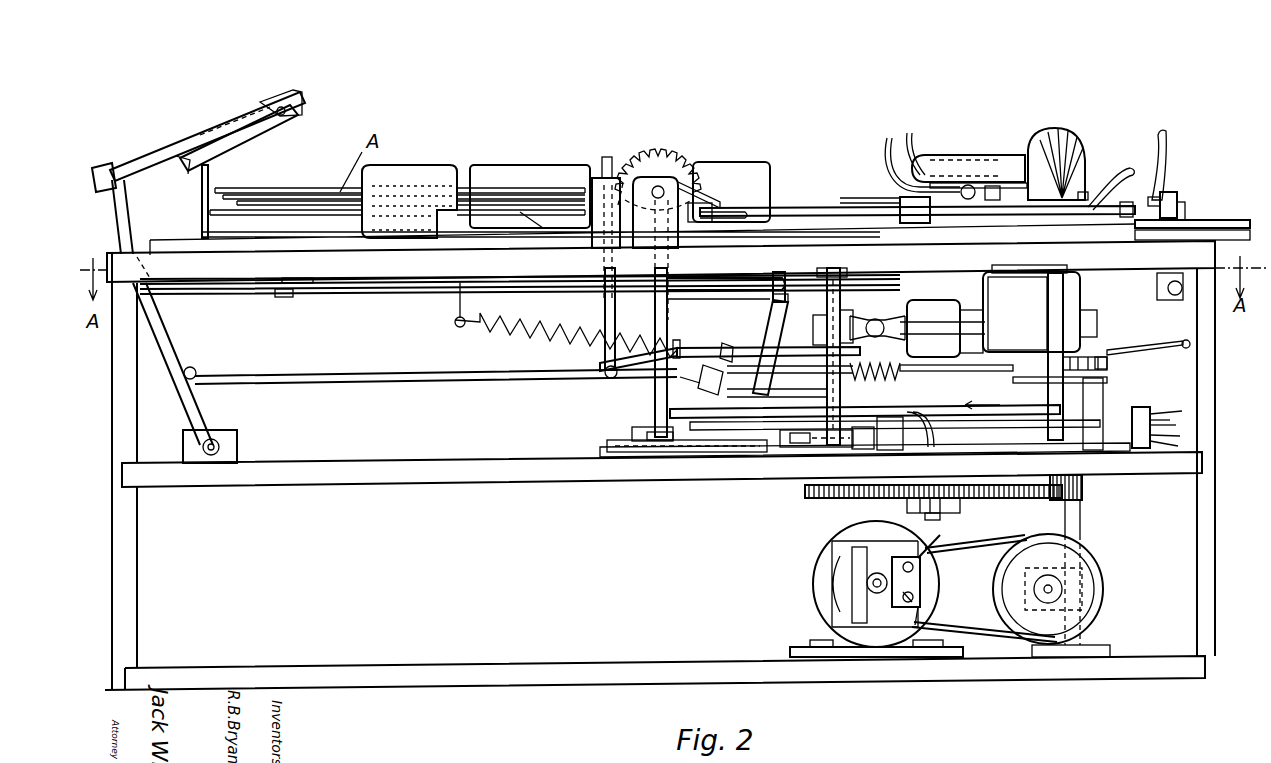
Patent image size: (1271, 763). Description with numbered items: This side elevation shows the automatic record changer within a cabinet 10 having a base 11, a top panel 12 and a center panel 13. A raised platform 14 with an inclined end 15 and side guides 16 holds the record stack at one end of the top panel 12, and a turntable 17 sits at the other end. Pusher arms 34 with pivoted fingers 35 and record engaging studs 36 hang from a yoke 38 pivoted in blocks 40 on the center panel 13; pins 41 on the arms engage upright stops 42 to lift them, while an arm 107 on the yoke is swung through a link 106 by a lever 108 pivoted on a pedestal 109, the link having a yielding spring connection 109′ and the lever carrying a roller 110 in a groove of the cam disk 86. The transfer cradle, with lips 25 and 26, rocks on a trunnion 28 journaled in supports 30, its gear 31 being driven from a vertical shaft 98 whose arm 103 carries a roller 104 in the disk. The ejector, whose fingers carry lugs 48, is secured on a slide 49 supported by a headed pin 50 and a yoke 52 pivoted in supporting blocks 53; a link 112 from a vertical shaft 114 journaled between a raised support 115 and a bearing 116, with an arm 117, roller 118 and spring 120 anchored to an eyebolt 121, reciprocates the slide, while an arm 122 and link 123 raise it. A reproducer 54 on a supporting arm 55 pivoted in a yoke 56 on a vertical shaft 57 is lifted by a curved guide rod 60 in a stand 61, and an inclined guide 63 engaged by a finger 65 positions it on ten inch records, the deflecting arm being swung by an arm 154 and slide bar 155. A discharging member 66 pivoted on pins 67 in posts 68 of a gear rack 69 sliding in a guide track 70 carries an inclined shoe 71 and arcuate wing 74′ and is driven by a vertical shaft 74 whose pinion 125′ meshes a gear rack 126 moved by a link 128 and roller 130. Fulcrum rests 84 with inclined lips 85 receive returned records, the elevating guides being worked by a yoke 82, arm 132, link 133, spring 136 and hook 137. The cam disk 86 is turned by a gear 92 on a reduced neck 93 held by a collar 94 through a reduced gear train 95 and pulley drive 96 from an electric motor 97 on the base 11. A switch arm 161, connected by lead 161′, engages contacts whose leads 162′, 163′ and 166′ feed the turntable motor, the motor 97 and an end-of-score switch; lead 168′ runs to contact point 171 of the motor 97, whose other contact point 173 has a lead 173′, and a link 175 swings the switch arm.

The cabinet 10 is at (128, 583).
The base 11 is at (463, 638).
The center panel 13 is at (545, 478).
The guide track 70 is at (545, 248).
The pusher arms 34 is at (198, 153).
The pivoted fingers 35 is at (302, 95).
The record engaging studs 36 is at (192, 170).
The pins 41 is at (122, 190).
The upright stops 42 is at (118, 232).
The yoke 38 is at (168, 340).
The blocks 40 is at (240, 441).
The arm 107 is at (196, 368).
The link 106 is at (436, 368).
The raised platform 14 is at (292, 224).
The guides 16 is at (430, 172).
The inclined end 15 is at (545, 218).
The fulcrum rests 84 is at (597, 178).
The trunnion 28 is at (664, 188).
The supports 30 is at (650, 150).
The inclined lips 85 is at (640, 166).
The gear 31 is at (672, 158).
The lip 25 is at (702, 190).
The lugs 48 is at (716, 206).
The lip 26 is at (740, 212).
The turntable 17 is at (768, 222).
The pins 67 is at (877, 200).
The vertical shaft 57 is at (900, 198).
The curved guide rod 60 is at (887, 148).
The yoke 56 is at (912, 146).
The supporting arm 55 is at (978, 162).
The stand 61 is at (985, 185).
The reproducer 54 is at (1045, 135).
The depending finger 65 is at (1085, 192).
The inclined guide 63 is at (1115, 180).
The arcuate wing 74′ is at (1165, 150).
The inclined shoe 71 is at (1177, 195).
The discharging member 66 is at (1185, 207).
The upright posts 68 is at (1187, 214).
The gear rack 69 is at (1200, 234).
The horizontal slide bar 155 is at (1005, 272).
The arm 154 is at (1158, 285).
The slide 49 is at (380, 290).
The top panel 12 is at (270, 276).
The headed pin 50 is at (284, 298).
The bearing 116 is at (842, 275).
The vertical shaft 114 is at (842, 293).
The yoke 52 is at (710, 283).
The supporting blocks 53 is at (786, 282).
The link 112 is at (603, 300).
The vertical shaft 74 is at (655, 400).
The spring 136 is at (566, 335).
The hook 137 is at (455, 320).
The yoke 82 is at (650, 364).
The arm 132 is at (722, 345).
The link 133 is at (775, 332).
The arm 122 is at (782, 318).
The link 123 is at (750, 398).
The raised support 115 is at (696, 447).
The link 128 is at (640, 440).
The pinion 125′ is at (660, 455).
The roller 118 is at (783, 448).
The gear rack 126 is at (760, 445).
The arm 117 is at (858, 450).
The roller 130 is at (902, 444).
The cam disk 86 is at (975, 430).
The roller 110 is at (1030, 378).
The vertical shaft 98 is at (1063, 295).
The yielding spring connection 109′ is at (1100, 360).
The spring 120 is at (1150, 347).
The eyebolt 121 is at (1190, 344).
The lever 108 is at (1108, 365).
The arm 103 is at (1108, 381).
The roller 104 is at (990, 405).
The pedestal 109 is at (1090, 451).
The link 175 is at (1138, 450).
The switch arm 161 is at (1152, 420).
The lead 163′ is at (1182, 411).
The lead 161′ is at (1176, 425).
The lead 166′ is at (1180, 436).
The lead wire 162′ is at (1178, 446).
The gear 92 is at (805, 490).
The reduced gear train 95 is at (1084, 488).
The collar 94 is at (907, 506).
The reduced neck 93 is at (940, 520).
The electric motor 97 is at (815, 580).
The contact point 173 is at (928, 569).
The lead 173′ is at (935, 541).
The contact point 171 is at (910, 597).
The pulley drive 96 is at (963, 618).
The lead 168′ is at (913, 607).